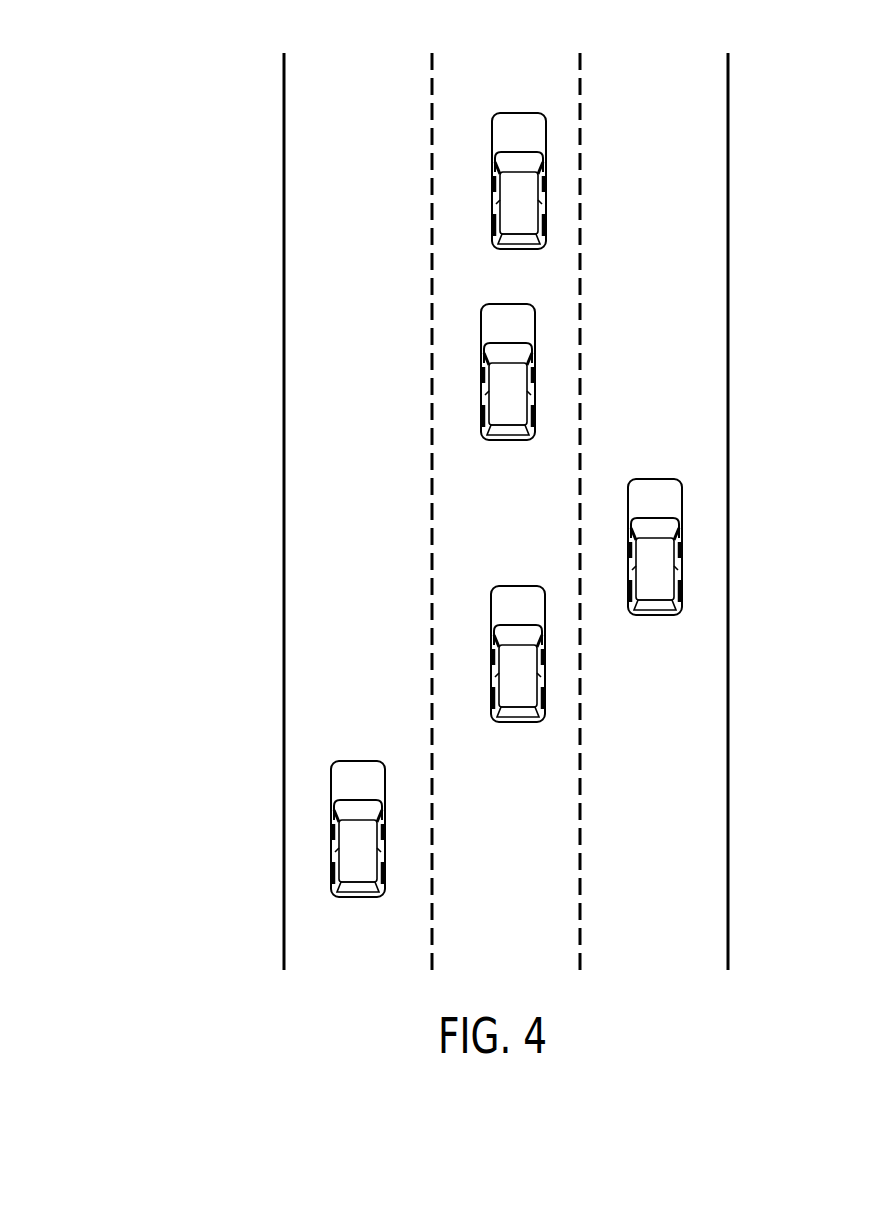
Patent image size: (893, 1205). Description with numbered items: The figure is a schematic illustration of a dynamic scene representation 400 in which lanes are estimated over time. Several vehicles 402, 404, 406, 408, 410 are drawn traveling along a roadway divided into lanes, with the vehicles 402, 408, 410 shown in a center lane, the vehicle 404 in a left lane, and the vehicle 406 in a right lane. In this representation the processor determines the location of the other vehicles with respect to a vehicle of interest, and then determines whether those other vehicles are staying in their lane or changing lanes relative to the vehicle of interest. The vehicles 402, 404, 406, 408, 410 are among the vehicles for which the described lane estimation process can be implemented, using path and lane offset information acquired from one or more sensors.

The driving environment / roadway scenario 400 is at (117, 147).
The vehicle 402 is at (513, 585).
The vehicle 404 is at (363, 760).
The vehicle 406 is at (662, 478).
The vehicle 408 is at (512, 303).
The vehicle 410 is at (513, 112).